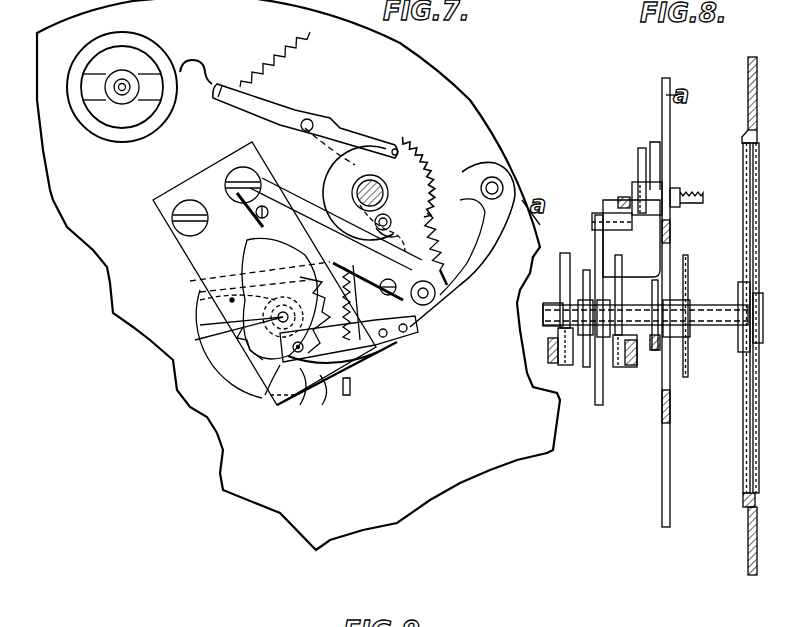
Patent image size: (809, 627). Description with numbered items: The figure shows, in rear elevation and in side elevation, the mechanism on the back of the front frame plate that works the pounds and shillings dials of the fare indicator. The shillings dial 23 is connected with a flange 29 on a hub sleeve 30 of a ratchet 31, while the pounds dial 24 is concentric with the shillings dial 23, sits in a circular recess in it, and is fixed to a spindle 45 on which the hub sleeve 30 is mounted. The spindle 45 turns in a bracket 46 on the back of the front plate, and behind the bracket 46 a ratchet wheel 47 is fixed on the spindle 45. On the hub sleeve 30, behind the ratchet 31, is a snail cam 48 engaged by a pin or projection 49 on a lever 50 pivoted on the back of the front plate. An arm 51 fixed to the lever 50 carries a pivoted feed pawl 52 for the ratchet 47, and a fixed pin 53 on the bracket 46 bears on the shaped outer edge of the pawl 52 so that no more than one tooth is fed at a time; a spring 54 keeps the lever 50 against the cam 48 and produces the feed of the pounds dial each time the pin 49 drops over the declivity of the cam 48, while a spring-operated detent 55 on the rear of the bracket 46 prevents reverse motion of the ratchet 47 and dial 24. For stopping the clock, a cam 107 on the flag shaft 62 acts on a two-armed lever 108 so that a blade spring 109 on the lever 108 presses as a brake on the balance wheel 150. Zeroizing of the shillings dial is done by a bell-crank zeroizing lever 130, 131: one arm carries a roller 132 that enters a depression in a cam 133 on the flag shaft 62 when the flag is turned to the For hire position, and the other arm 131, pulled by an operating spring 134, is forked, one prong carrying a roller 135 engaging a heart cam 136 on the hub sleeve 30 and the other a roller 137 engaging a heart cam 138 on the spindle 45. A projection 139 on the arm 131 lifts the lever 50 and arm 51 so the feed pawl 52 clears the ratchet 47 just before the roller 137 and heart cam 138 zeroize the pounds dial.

In FIG. 7, the balance wheel 150 is at (125, 38).
In FIG. 7, the blade spring 109 is at (200, 58).
In FIG. 7, the two-armed lever 108 is at (358, 136).
In FIG. 7, the cam 107 is at (350, 152).
In FIG. 7, the cam 133 is at (340, 172).
In FIG. 8, the cam 133 is at (638, 150).
In FIG. 7, the flag shaft 62 is at (357, 191).
In FIG. 8, the flag shaft 62 is at (686, 187).
In FIG. 7, the operating spring 134 is at (420, 166).
In FIG. 7, the arm 51 is at (318, 225).
In FIG. 7, the zeroizing lever 130 is at (434, 218).
In FIG. 8, the zeroizing lever 130 is at (618, 195).
In FIG. 7, the lever arm 131 is at (482, 250).
In FIG. 8, the lever arm 131 is at (545, 355).
In FIG. 7, the roller 132 is at (394, 233).
In FIG. 8, the roller 132 is at (632, 229).
In FIG. 7, the projection 139 is at (384, 232).
In FIG. 7, the lever 50 is at (386, 296).
In FIG. 7, the feed pawl 52 is at (252, 225).
In FIG. 7, the pin or projection 49 is at (298, 299).
In FIG. 7, the heart cam 136 is at (200, 283).
In FIG. 8, the heart cam 136 is at (620, 253).
In FIG. 7, the snail cam 48 is at (230, 300).
In FIG. 8, the snail cam 48 is at (653, 325).
In FIG. 7, the fixed pin 53 is at (240, 303).
In FIG. 7, the heart cam 138 is at (228, 325).
In FIG. 8, the heart cam 138 is at (565, 252).
In FIG. 7, the spindle 45 is at (229, 335).
In FIG. 8, the spindle 45 is at (552, 306).
In FIG. 7, the ratchet wheel 47 is at (222, 362).
In FIG. 8, the ratchet wheel 47 is at (586, 368).
In FIG. 7, the spring 54 is at (352, 376).
In FIG. 7, the bracket 46 is at (275, 398).
In FIG. 8, the bracket 46 is at (597, 214).
In FIG. 7, the roller 137 is at (302, 397).
In FIG. 8, the roller 137 is at (596, 385).
In FIG. 7, the detent 55 is at (326, 399).
In FIG. 8, the roller 135 is at (624, 363).
In FIG. 8, the hub sleeve 30 is at (708, 327).
In FIG. 8, the flange 29 is at (740, 352).
In FIG. 8, the ratchet 31 is at (688, 365).
In FIG. 8, the pounds dial 24 is at (758, 428).
In FIG. 8, the shillings dial 23 is at (748, 525).